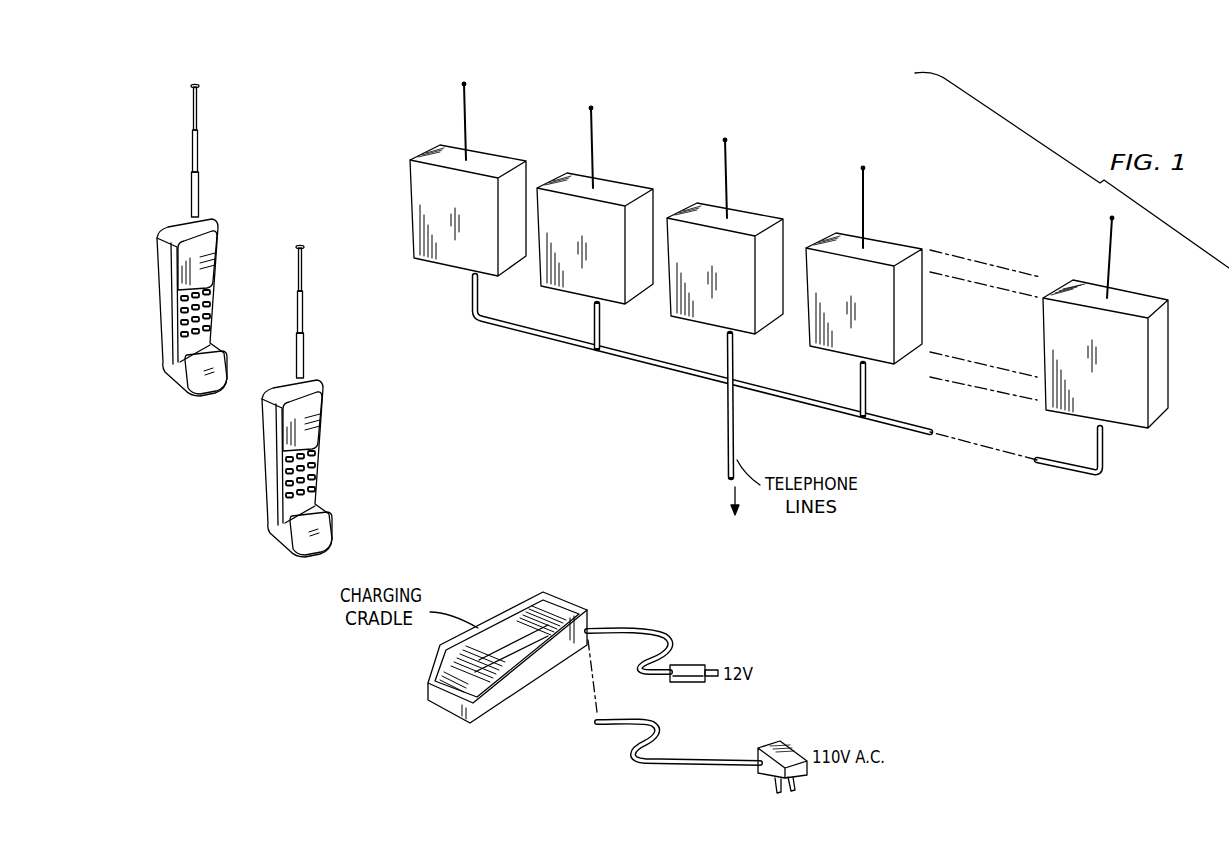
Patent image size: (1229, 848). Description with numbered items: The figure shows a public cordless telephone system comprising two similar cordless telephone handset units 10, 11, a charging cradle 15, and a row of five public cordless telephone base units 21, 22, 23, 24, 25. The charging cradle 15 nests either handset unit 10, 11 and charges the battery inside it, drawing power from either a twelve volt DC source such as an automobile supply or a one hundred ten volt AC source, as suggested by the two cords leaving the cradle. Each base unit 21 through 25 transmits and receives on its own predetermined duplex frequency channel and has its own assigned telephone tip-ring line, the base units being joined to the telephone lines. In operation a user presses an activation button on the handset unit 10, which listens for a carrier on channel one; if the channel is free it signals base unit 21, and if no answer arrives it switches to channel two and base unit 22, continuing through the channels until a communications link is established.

The cordless telephone handset unit 10 is at (212, 305).
The cordless telephone handset unit 11 is at (317, 468).
The charging cradle 15 is at (575, 603).
The public cordless telephone base unit 21 is at (490, 158).
The public cordless telephone base unit 22 is at (618, 185).
The public cordless telephone base unit 23 is at (752, 216).
The public cordless telephone base unit 24 is at (891, 247).
The public cordless telephone base unit 25 is at (1150, 300).